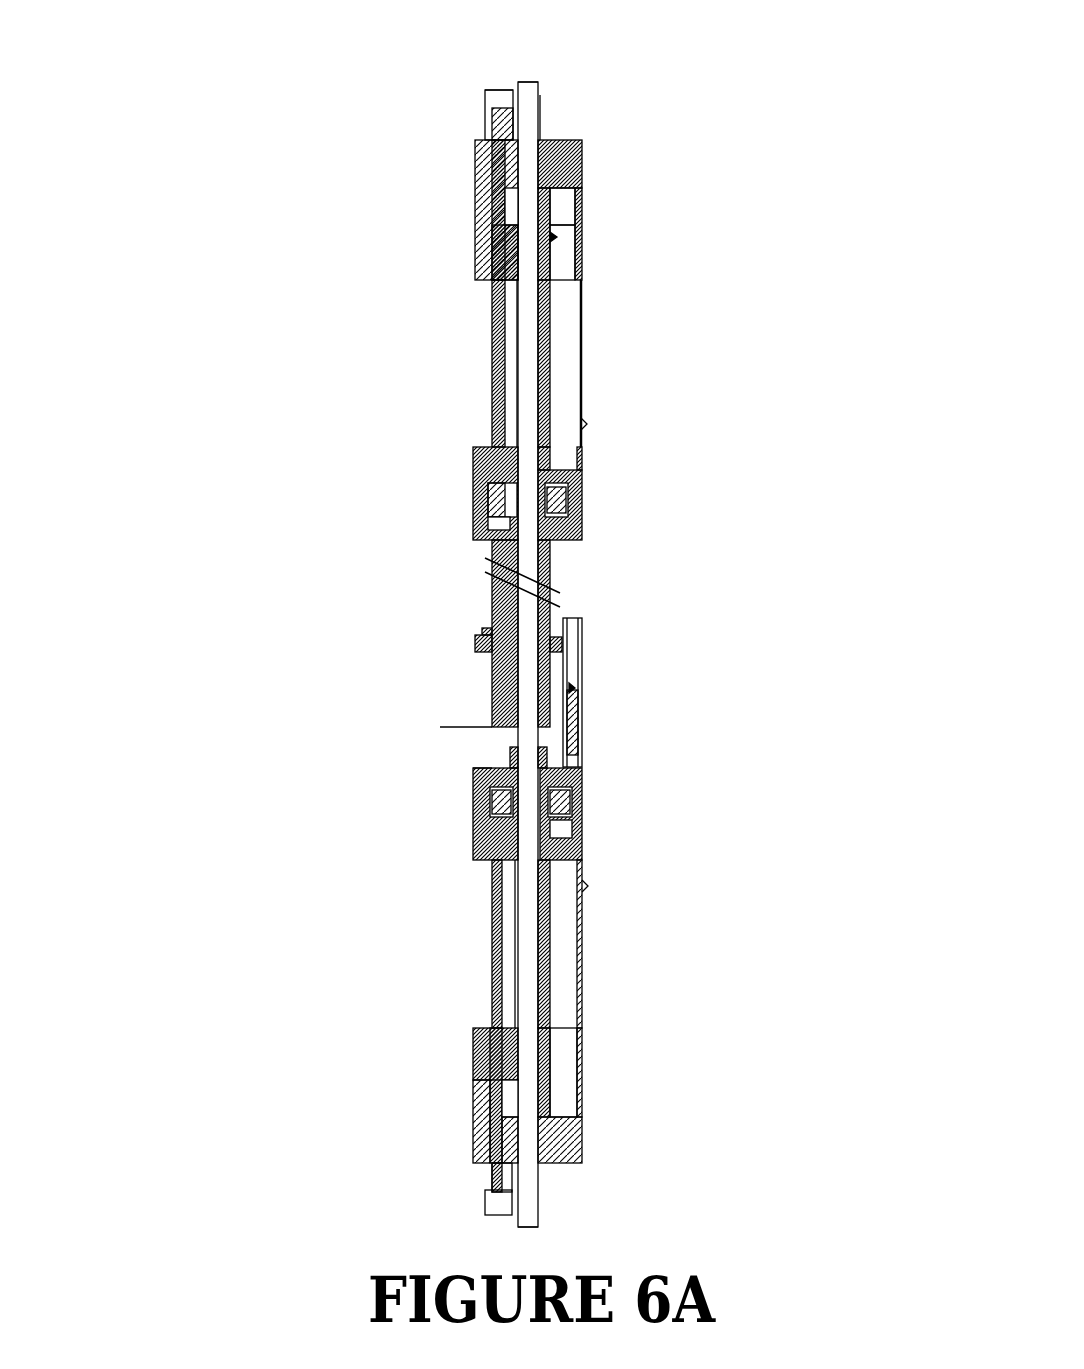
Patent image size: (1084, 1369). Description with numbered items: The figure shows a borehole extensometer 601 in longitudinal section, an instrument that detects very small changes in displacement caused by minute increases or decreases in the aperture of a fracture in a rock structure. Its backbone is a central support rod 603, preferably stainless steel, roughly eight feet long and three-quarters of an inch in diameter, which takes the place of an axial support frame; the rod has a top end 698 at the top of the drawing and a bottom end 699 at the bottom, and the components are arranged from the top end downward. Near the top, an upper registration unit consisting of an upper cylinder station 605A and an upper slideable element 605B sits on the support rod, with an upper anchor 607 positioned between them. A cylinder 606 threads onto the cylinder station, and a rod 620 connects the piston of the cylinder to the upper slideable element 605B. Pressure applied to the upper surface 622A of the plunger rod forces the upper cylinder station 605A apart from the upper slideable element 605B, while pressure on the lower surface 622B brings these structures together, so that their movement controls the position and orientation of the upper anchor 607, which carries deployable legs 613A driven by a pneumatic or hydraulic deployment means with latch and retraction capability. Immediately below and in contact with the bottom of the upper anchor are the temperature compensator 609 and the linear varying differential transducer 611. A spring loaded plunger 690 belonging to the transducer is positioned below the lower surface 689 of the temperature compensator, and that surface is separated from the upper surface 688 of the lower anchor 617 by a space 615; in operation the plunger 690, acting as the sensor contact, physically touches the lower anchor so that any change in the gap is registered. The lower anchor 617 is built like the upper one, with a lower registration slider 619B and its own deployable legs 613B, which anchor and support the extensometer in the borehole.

The borehole extensometer 601 is at (532, 66).
The central support rod 603 is at (540, 96).
The upper cylinder station 605A is at (578, 153).
The upper slideable element 605B is at (562, 490).
The cylinder 606 is at (488, 76).
The upper anchor 607 is at (519, 396).
The temperature compensator 609 is at (466, 650).
The linear varying differential transducer 611 is at (567, 620).
The deployable leg 613A is at (583, 375).
The deployable leg 613B is at (585, 915).
The space 615 is at (453, 740).
The lower anchor 617 is at (553, 904).
The lower registration slider 619B is at (583, 795).
The rod 620 is at (493, 315).
The upper surface of plunger rod 622A is at (485, 97).
The lower surface of plunger rod 622B is at (485, 116).
The upper surface of lower anchor 688 is at (473, 768).
The lower surface of temperature compensator 689 is at (480, 655).
The spring loaded plunger 690 is at (577, 731).
The top end 698 is at (517, 82).
The bottom end 699 is at (530, 1227).